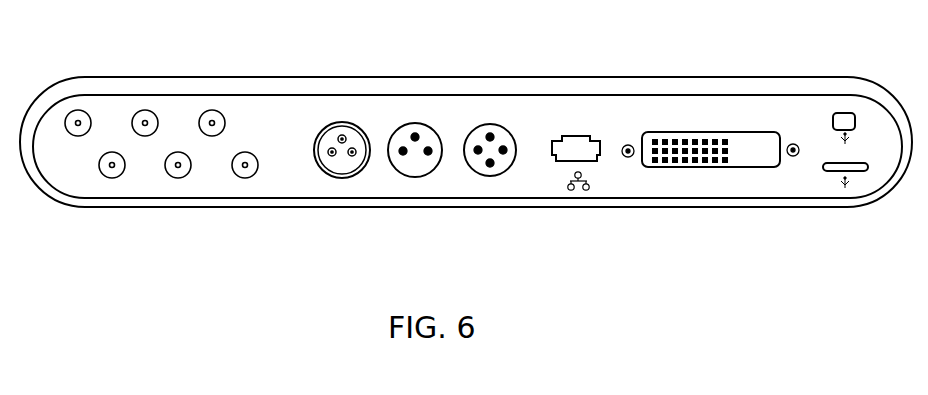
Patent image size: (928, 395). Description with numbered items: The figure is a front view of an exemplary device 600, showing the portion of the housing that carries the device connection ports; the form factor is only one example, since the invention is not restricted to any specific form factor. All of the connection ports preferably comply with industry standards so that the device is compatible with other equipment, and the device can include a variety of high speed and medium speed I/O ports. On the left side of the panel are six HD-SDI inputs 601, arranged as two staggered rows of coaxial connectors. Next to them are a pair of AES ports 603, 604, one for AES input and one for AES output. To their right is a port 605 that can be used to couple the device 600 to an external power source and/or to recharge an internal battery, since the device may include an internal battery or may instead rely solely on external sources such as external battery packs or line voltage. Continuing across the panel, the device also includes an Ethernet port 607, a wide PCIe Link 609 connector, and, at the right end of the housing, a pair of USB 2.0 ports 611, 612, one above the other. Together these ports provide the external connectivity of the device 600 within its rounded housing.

The device 600 is at (658, 247).
The HD-SDI inputs 601 is at (168, 254).
The AES port 603 is at (342, 186).
The AES port 604 is at (415, 186).
The port 605 is at (490, 186).
The Ethernet port 607 is at (578, 121).
The PCIe Link 609 is at (720, 121).
The USB 2.0 port 611 is at (845, 111).
The USB 2.0 port 612 is at (851, 165).